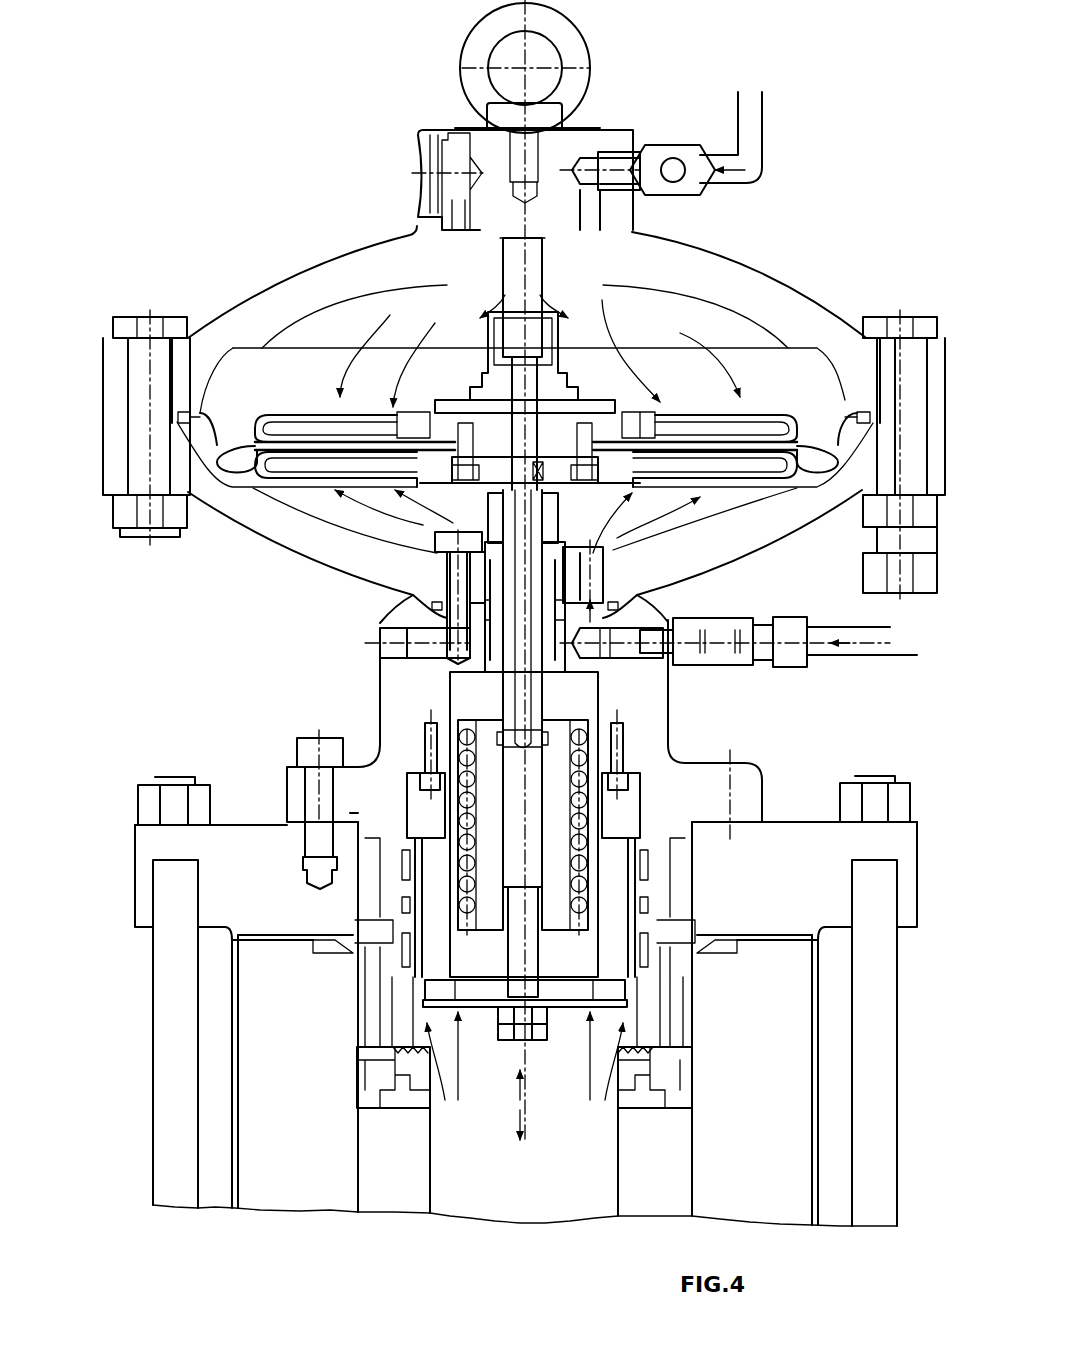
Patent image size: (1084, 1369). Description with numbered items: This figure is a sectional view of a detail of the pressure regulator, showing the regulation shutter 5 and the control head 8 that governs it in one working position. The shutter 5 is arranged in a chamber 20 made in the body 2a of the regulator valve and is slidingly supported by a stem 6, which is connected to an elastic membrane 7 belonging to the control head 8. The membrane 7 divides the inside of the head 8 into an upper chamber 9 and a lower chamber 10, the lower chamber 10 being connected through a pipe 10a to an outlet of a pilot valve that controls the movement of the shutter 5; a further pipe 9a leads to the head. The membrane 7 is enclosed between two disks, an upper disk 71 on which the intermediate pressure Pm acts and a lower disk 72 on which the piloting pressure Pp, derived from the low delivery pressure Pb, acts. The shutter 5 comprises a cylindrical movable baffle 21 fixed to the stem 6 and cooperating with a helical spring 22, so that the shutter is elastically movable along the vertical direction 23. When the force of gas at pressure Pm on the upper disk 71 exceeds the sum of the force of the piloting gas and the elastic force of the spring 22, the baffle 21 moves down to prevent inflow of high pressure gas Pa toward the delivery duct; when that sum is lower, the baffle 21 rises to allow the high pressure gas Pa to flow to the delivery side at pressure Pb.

The control head 8 is at (345, 135).
The pressure supply pipe 9a is at (735, 122).
The upper disk 71 is at (320, 428).
The elastic membrane 7 is at (240, 460).
The lower disk 72 is at (305, 467).
The stem 6 is at (505, 973).
The upper chamber 9 is at (692, 398).
The lower chamber 10 is at (517, 556).
The pipe 10a is at (880, 655).
The helical spring 22 is at (583, 777).
The body 2a is at (747, 788).
The chamber 20 is at (438, 826).
The regulation shutter 5 is at (652, 999).
The cylindrical movable baffle 21 is at (413, 993).
The vertical direction 23 is at (520, 1105).
The intermediate pressure Pm is at (683, 320).
The piloting pressure Pp is at (723, 503).
The low pressure gas pressure Pb is at (258, 1048).
The high pressure gas pressure Pa is at (548, 1180).